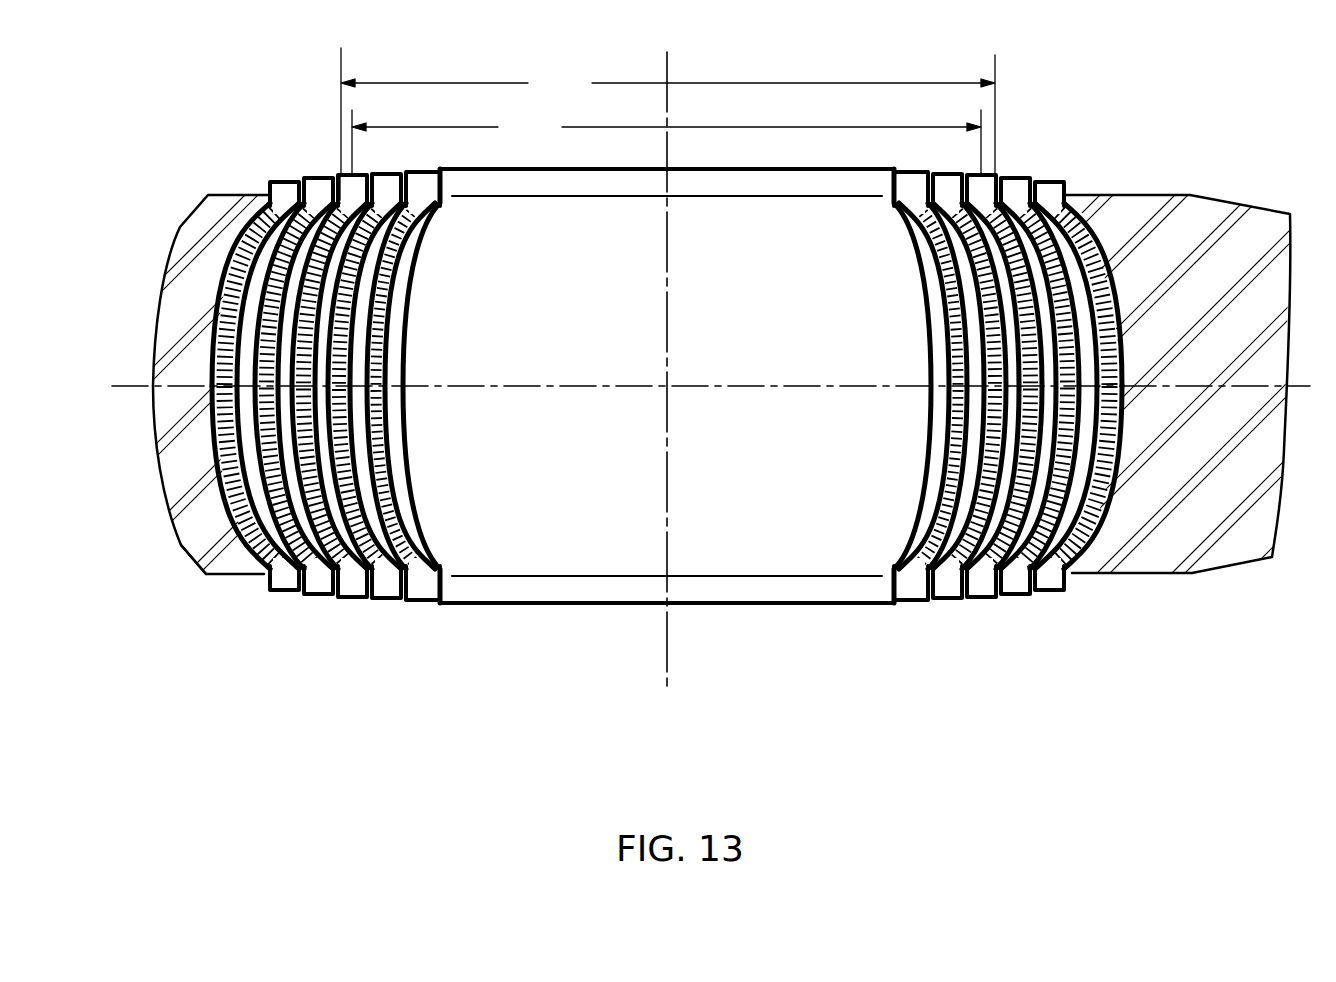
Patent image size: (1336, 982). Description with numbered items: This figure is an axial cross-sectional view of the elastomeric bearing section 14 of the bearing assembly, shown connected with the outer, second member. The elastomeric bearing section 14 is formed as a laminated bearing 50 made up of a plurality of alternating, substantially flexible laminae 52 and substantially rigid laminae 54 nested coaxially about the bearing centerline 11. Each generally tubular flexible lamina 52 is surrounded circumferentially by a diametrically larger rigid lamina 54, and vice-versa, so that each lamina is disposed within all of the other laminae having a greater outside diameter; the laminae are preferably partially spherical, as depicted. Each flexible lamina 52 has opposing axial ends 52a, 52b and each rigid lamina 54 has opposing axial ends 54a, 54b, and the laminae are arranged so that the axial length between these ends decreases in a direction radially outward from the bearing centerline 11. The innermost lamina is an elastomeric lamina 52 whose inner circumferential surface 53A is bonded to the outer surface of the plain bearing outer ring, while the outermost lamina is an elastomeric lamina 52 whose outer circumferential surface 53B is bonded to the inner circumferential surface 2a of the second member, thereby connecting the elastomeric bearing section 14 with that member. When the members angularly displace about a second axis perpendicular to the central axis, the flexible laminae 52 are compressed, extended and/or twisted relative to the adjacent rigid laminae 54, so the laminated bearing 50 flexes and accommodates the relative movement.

The elastomeric bearing section 14 is at (282, 110).
The bearing centerline 11 is at (667, 676).
The inner circumferential surface 2a is at (230, 492).
The laminated bearing 50 is at (946, 612).
The flexible laminae 52 is at (262, 592).
The rigid laminae 54 is at (310, 600).
The axial end of flexible lamina 52a is at (1042, 176).
The axial end of flexible lamina 52b is at (1044, 603).
The axial end of rigid lamina 54a is at (1060, 182).
The axial end of rigid lamina 54b is at (1066, 590).
The inner circumferential surface 53A is at (532, 562).
The outer circumferential surface 53B is at (211, 448).